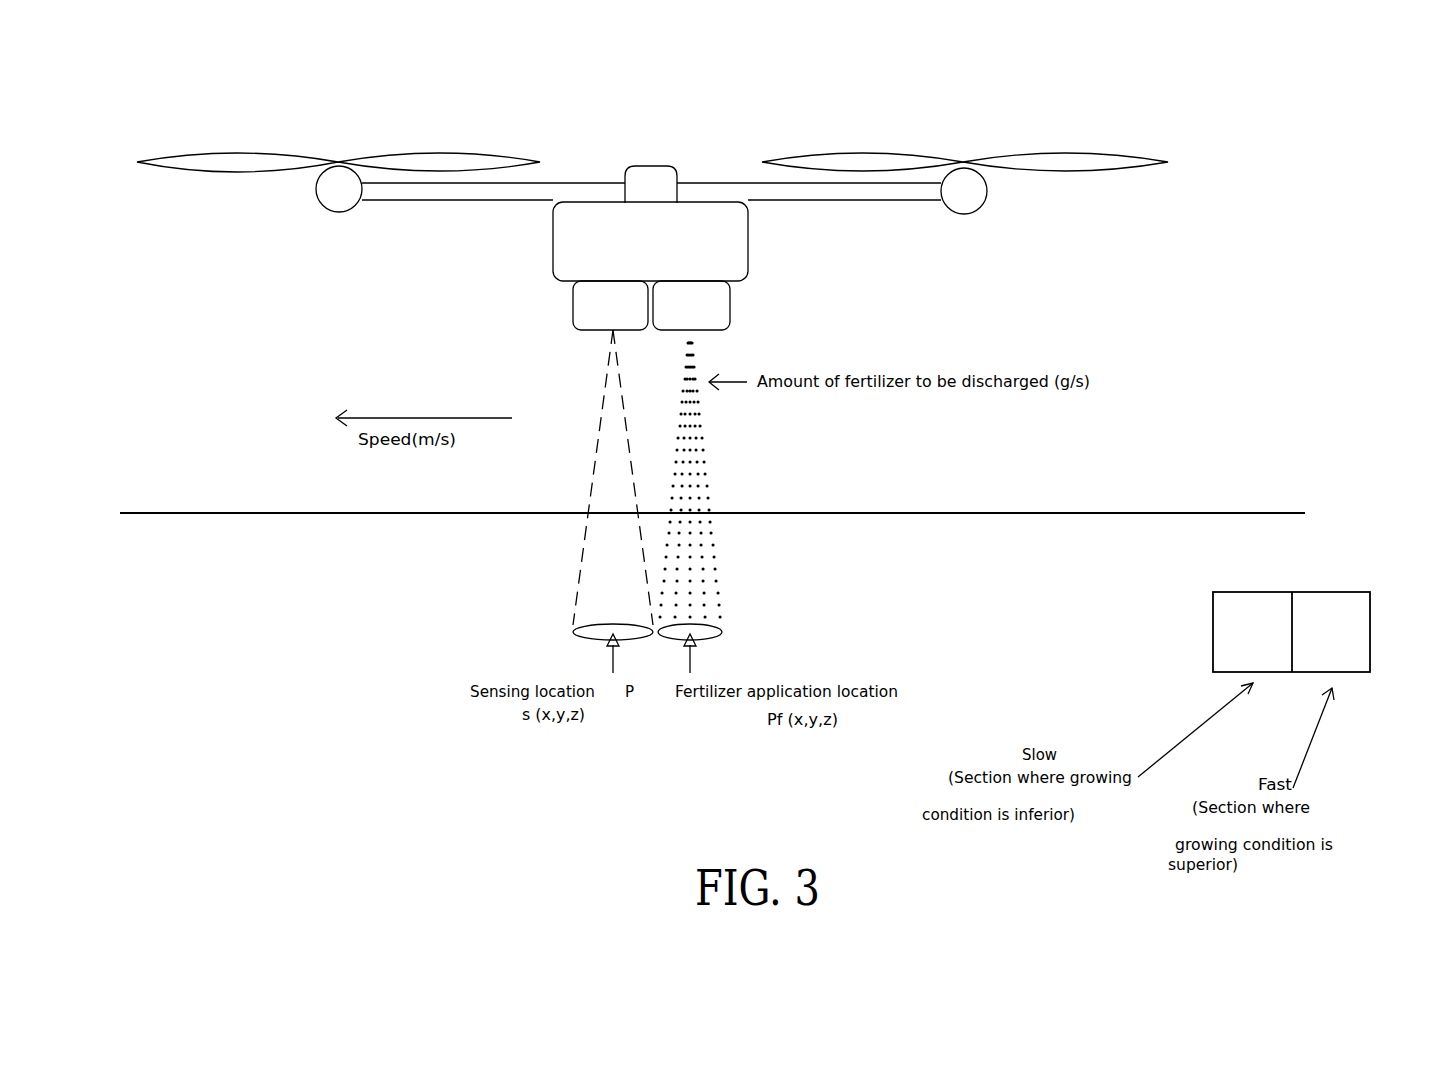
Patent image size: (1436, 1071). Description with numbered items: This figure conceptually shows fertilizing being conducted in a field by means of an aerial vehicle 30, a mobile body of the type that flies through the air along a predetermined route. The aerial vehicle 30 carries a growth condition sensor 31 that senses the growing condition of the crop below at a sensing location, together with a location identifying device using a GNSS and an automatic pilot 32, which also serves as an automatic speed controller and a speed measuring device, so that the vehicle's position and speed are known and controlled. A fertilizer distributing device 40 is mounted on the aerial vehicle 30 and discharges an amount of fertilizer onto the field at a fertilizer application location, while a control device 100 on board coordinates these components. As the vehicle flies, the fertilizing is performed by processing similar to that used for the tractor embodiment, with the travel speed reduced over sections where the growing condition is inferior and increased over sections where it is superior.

The aerial vehicle 30 is at (972, 193).
The growth condition sensor 31 is at (605, 308).
The automatic pilot 32 is at (648, 183).
The fertilizer distributing device 40 is at (710, 307).
The control device 100 is at (590, 241).